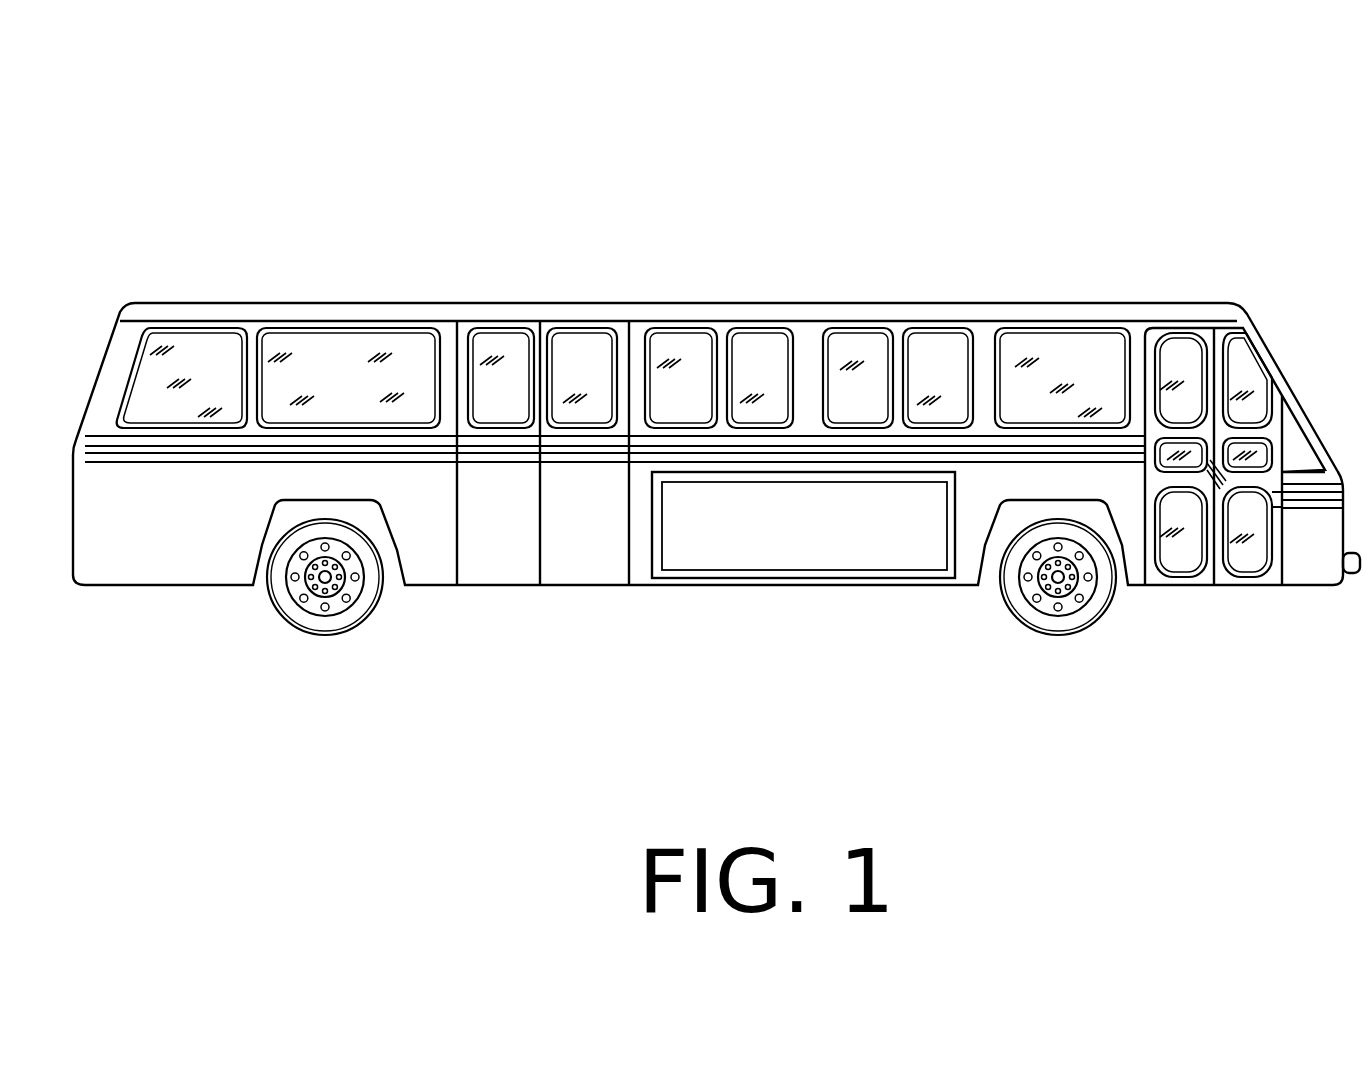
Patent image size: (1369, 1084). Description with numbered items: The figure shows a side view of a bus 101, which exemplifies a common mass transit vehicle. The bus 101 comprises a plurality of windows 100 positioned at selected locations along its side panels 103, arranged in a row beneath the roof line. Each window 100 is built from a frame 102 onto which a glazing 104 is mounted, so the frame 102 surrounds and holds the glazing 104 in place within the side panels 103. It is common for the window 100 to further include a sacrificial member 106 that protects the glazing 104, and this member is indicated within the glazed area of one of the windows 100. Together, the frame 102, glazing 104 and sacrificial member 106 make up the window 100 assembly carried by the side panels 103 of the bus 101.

The window 100 is at (252, 324).
The bus 101 is at (353, 232).
The frame 102 is at (287, 333).
The side panels 103 is at (240, 447).
The glazing 104 is at (403, 370).
The sacrificial member 106 is at (338, 367).